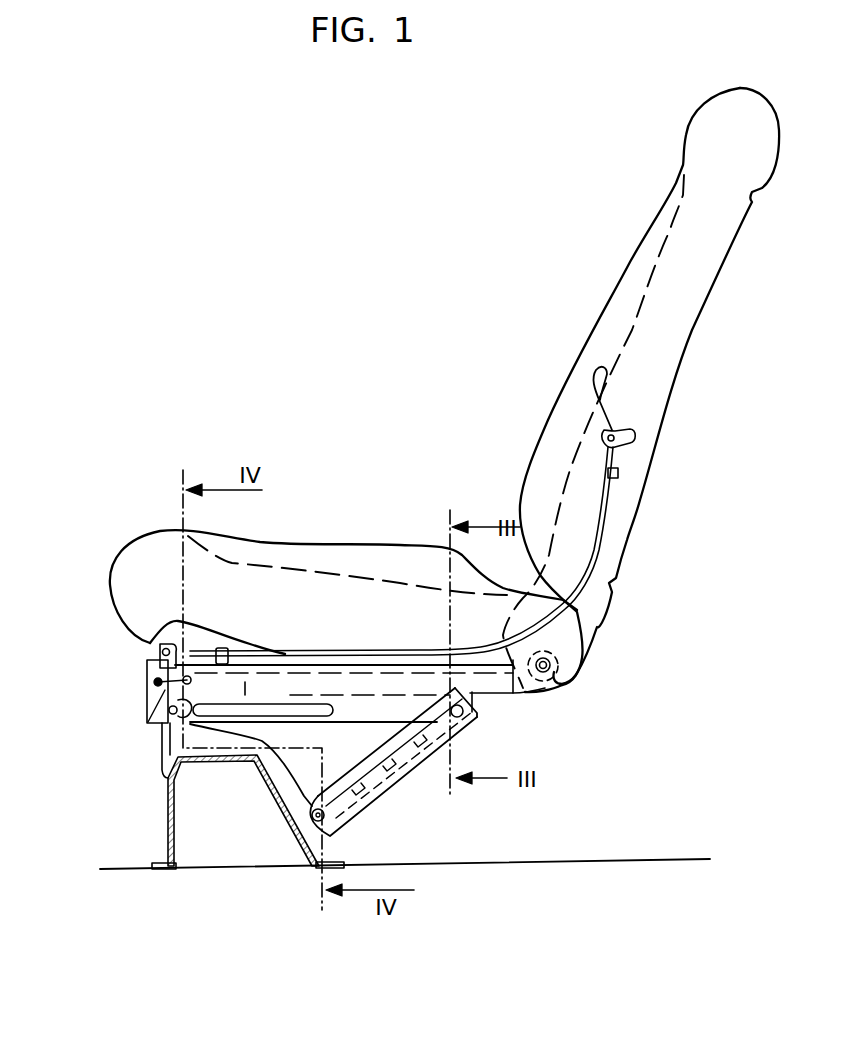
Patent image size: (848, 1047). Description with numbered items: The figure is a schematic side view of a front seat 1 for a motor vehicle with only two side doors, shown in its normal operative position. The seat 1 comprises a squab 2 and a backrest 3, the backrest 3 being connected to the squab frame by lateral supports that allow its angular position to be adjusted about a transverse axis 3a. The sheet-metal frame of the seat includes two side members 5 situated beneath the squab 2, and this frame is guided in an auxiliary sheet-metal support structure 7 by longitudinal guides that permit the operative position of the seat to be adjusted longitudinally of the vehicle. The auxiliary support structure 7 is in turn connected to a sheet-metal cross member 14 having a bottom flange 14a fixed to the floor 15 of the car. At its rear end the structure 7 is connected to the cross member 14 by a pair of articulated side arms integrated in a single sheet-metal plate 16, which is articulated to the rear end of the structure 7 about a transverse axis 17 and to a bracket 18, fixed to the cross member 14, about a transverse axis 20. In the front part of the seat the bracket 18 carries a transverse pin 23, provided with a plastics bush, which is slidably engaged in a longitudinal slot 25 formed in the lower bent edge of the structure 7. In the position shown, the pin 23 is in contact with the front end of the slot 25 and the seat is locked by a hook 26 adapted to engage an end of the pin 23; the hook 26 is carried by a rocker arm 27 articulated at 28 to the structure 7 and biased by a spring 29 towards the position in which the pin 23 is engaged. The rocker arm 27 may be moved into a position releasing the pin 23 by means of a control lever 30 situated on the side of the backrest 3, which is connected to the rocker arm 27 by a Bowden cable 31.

The seat 1 is at (427, 436).
The squab 2 is at (342, 557).
The backrest 3 is at (581, 374).
The transverse axis 3a is at (553, 664).
The side members 5 is at (526, 690).
The auxiliary sheet-metal support structure 7 is at (357, 708).
The cross member 14 is at (168, 822).
The bottom flange 14a is at (160, 865).
The floor 15 is at (443, 861).
The sheet-metal plate 16 is at (376, 797).
The transverse axis 17 is at (479, 714).
The bracket 18 is at (291, 780).
The transverse axis 20 is at (303, 829).
The transverse pin 23 is at (170, 712).
The longitudinal slot 25 is at (293, 671).
The hook 26 is at (162, 727).
The rocker arm 27 is at (158, 653).
The articulation 28 is at (154, 682).
The spring 29 is at (180, 668).
The control lever 30 is at (586, 400).
The Bowden cable 31 is at (607, 508).